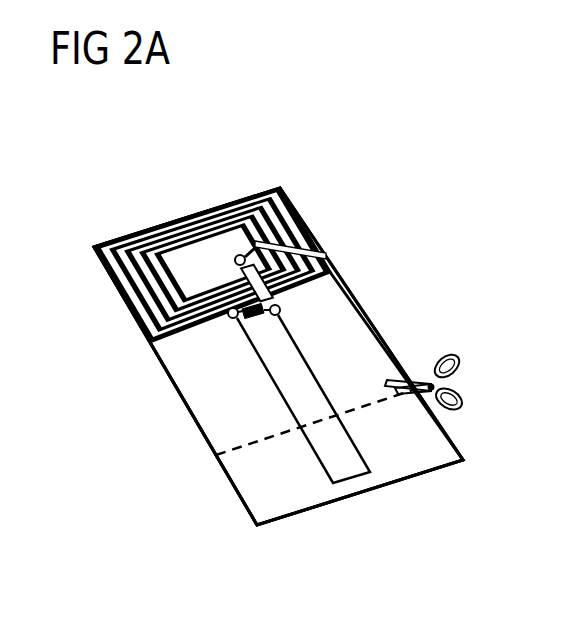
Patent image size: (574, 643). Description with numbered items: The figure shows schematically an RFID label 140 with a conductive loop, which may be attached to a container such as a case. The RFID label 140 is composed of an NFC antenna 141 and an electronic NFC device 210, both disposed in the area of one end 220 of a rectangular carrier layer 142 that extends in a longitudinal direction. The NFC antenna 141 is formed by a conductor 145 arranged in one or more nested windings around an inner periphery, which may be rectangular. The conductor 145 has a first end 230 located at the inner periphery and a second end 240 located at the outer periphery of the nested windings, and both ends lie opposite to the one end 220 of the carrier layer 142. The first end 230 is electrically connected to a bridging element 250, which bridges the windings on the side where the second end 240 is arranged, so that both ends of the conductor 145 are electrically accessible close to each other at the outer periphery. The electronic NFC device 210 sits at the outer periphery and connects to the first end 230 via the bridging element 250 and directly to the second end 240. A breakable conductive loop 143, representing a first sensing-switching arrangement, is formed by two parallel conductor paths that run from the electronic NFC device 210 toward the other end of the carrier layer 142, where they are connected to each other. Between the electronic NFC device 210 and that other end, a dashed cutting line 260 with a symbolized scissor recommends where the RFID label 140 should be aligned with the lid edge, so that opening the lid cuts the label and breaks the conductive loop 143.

The RFID label 140 is at (186, 206).
The one end of the rectangular carrier layer 220 is at (252, 212).
The first end of the conductor 230 is at (292, 236).
The NFC antenna 141 is at (322, 244).
The conductor 145 is at (124, 294).
The rectangular carrier layer 142 is at (374, 343).
The bridging element 250 is at (282, 305).
The second end of the conductor 240 is at (233, 320).
The electronic NFC device 210 is at (254, 320).
The breakable conductive loop 143 is at (318, 467).
The dashed cutting line 260 is at (386, 402).